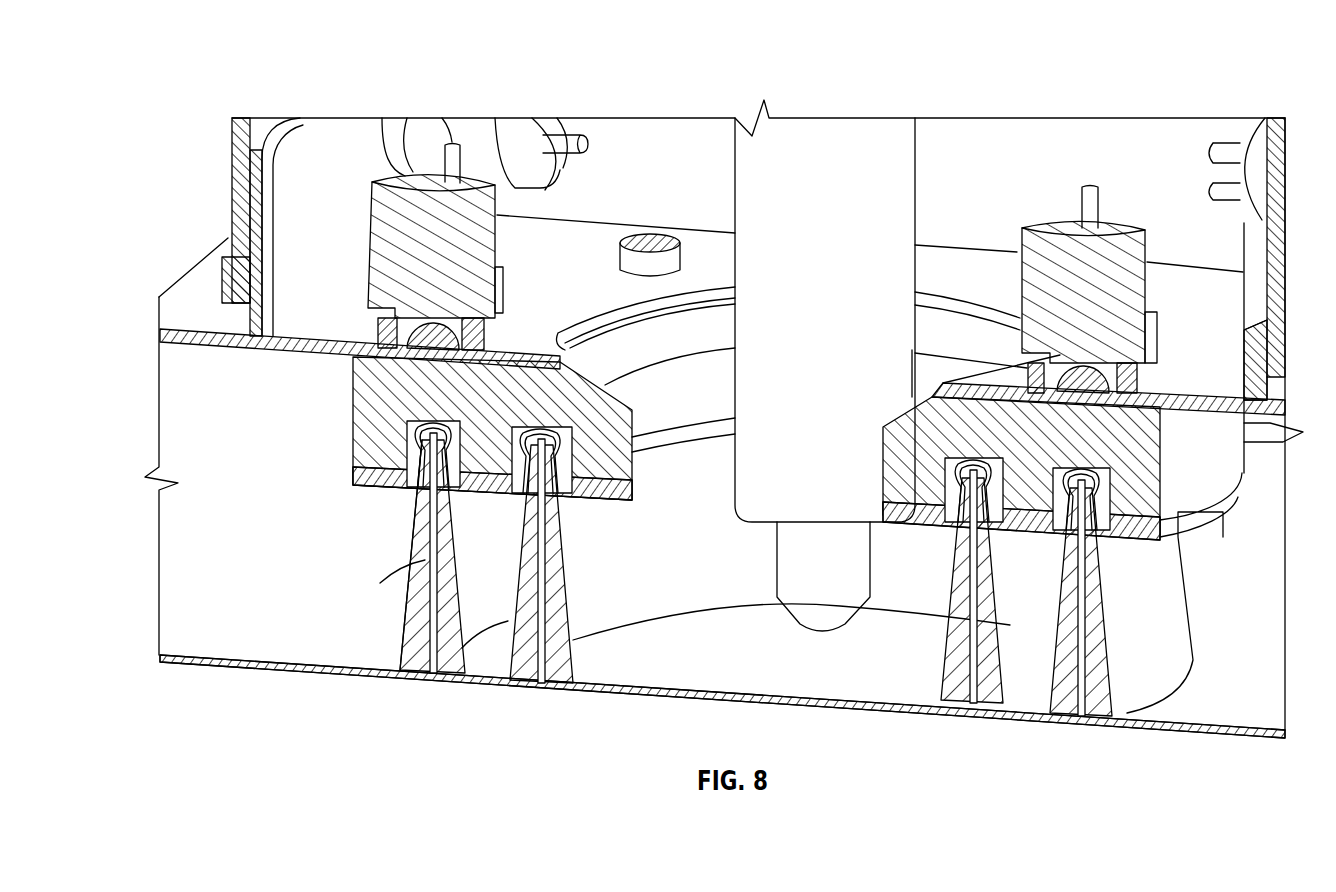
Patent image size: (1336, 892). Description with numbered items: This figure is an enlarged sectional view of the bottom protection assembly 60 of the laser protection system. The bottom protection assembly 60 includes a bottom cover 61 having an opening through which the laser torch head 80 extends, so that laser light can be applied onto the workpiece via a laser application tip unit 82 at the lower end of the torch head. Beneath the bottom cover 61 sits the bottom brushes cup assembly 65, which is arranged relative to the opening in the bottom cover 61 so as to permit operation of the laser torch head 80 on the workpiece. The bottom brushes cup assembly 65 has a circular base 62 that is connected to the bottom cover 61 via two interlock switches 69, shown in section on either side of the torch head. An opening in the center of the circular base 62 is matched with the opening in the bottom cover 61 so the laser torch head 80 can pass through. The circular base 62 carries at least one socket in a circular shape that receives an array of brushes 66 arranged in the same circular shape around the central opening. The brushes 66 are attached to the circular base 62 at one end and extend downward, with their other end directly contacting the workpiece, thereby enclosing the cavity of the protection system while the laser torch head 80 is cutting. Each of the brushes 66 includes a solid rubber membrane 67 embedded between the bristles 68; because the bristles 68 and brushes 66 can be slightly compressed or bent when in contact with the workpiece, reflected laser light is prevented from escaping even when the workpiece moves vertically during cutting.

The bottom protection assembly 60 is at (382, 700).
The bottom cover 61 is at (196, 292).
The circular base 62 is at (1250, 497).
The bottom brushes cup assembly 65 is at (340, 472).
The brushes 66 is at (408, 563).
The solid rubber membrane 67 is at (540, 686).
The bristles 68 is at (575, 660).
The interlock switches 69 is at (253, 207).
The laser torch head 80 is at (897, 127).
The laser application tip unit 82 is at (808, 633).